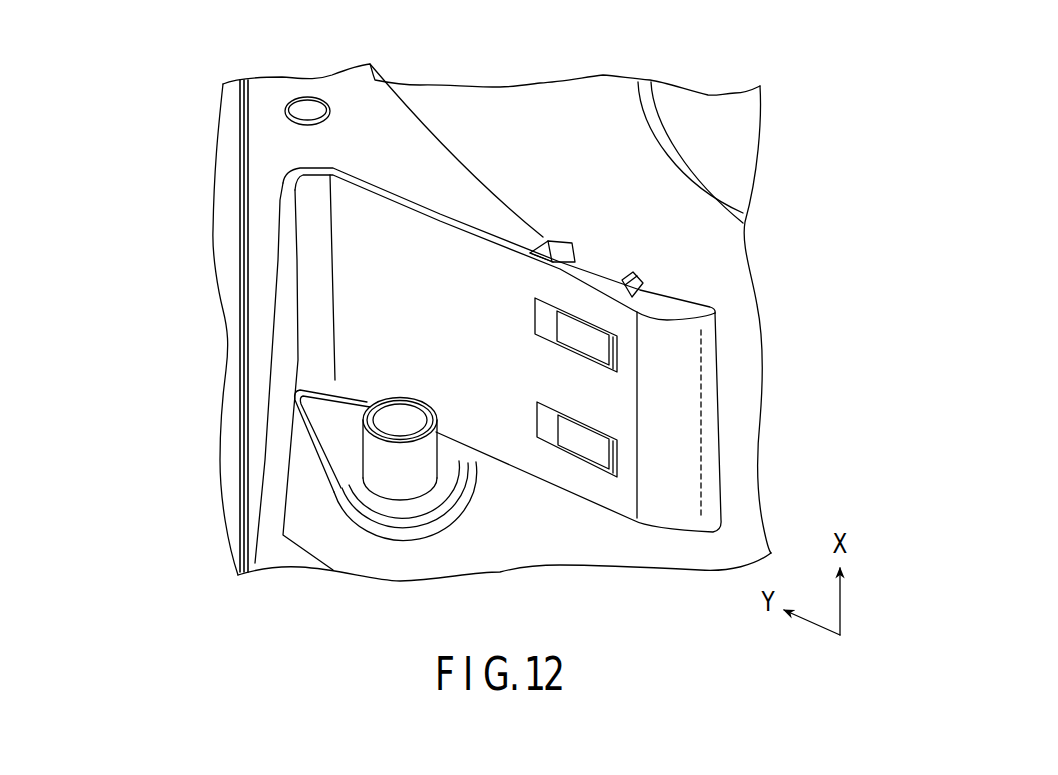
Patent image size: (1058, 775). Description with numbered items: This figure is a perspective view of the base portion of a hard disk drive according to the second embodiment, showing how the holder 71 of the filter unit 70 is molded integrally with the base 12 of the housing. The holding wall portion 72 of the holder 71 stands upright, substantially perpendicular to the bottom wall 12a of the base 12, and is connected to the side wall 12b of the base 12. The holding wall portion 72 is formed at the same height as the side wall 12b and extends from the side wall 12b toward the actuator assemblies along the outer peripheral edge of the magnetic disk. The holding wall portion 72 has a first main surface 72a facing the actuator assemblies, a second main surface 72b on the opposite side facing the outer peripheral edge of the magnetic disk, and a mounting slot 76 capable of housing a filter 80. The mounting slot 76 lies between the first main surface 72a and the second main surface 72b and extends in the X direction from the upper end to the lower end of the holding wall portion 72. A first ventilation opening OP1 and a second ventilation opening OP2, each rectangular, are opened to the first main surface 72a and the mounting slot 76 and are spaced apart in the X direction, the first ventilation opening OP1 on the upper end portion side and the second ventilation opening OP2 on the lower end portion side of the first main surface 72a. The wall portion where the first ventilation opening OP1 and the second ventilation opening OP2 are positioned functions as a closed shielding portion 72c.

The base 12 is at (186, 311).
The bottom wall 12a is at (732, 272).
The side wall 12b is at (230, 205).
The filter unit 70 is at (575, 166).
The holder 71 is at (475, 208).
The holding wall portion 72 is at (437, 183).
The first main surface 72a is at (497, 413).
The second main surface 72b is at (648, 272).
The closed shielding portion 72c is at (590, 402).
The mounting slot 76 is at (531, 245).
The filter 80 is at (583, 332).
The first ventilation opening OP1 is at (587, 353).
The second ventilation opening OP2 is at (590, 455).